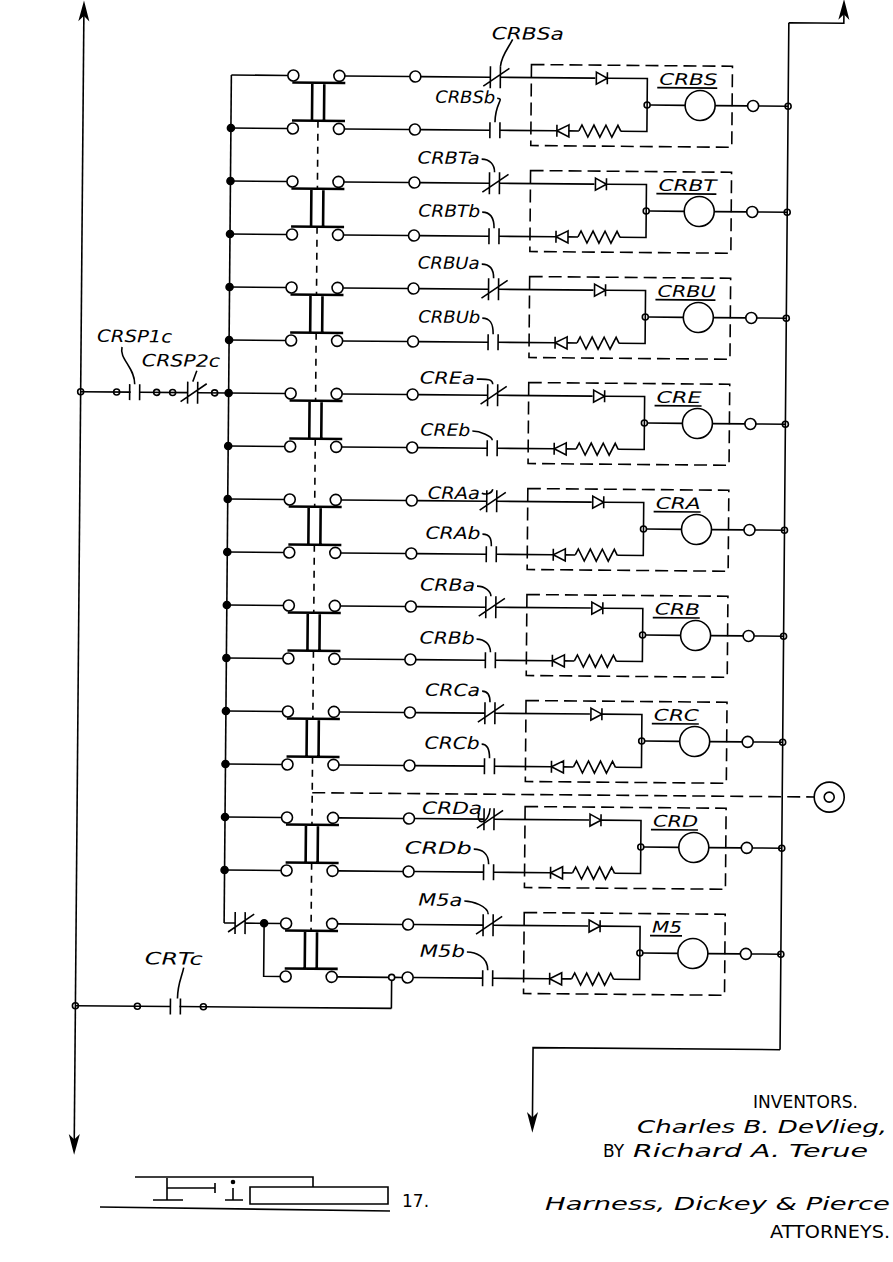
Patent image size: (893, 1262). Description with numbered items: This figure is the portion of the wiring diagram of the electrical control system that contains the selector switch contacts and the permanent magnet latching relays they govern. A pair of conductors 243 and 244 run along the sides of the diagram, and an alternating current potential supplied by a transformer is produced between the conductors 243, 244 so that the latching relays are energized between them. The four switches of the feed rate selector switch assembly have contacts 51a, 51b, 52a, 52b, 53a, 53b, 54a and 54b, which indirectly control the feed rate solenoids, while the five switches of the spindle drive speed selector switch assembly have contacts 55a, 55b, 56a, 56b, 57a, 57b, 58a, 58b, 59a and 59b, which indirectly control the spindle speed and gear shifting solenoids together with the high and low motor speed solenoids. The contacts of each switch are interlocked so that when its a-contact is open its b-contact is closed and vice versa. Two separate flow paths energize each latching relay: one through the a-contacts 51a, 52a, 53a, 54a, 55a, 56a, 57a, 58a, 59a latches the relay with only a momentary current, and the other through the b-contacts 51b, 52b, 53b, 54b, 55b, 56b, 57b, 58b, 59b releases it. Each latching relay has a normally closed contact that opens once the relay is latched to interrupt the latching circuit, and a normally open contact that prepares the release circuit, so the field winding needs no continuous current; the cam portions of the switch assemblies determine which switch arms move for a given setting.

The a-contact of switch S1 51a is at (315, 58).
The b-contact of switch S1 51b is at (320, 112).
The a-contact of switch S2 52a is at (319, 165).
The b-contact of switch S2 52b is at (319, 218).
The a-contact of switch S3 53a is at (319, 271).
The b-contact of switch S3 53b is at (318, 324).
The a-contact of switch S4 54a is at (318, 377).
The b-contact of switch S4 54b is at (317, 430).
The a-contact of switch S5 55a is at (317, 483).
The b-contact of switch S5 55b is at (316, 536).
The a-contact of switch S6 56a is at (316, 589).
The b-contact of switch S6 56b is at (315, 642).
The a-contact of switch S7 57a is at (315, 695).
The b-contact of switch S7 57b is at (314, 748).
The a-contact of switch S8 58a is at (314, 801).
The b-contact of switch S8 58b is at (314, 854).
The a-contact of switch S9 59a is at (313, 910).
The b-contact of switch S9 59b is at (237, 983).
The conductor 243 is at (85, 204).
The conductor 244 is at (833, 241).